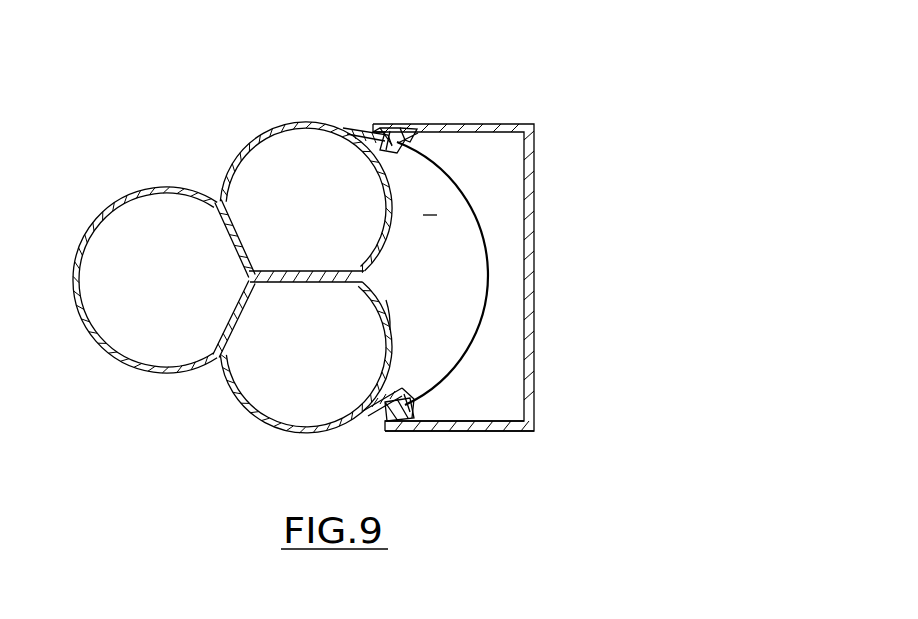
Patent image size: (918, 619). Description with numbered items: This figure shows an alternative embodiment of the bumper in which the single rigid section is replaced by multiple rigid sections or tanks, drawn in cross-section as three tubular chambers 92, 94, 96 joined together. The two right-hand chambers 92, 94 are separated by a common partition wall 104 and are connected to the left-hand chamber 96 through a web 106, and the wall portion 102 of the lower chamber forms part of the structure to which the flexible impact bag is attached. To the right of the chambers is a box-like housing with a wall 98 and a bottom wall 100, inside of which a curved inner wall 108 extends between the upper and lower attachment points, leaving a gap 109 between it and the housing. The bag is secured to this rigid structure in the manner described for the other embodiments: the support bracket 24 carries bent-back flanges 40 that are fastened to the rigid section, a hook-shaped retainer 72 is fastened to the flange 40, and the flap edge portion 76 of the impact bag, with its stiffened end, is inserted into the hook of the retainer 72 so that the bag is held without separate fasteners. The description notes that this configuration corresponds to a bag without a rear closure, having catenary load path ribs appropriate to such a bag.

The front-surface support bracket 24 is at (376, 163).
The bent-back flange 40 is at (370, 141).
The hook-shaped retainer 72 is at (400, 144).
The flap edge portion 76 is at (378, 136).
The lower tubular chamber 92 is at (268, 424).
The upper tubular chamber 94 is at (292, 125).
The outer tubular chamber 96 is at (150, 190).
The housing wall 98 is at (534, 308).
The bottom wall 100 is at (477, 398).
The chamber wall portion 102 is at (380, 318).
The partition wall 104 is at (302, 267).
The connecting web 106 is at (222, 244).
The curved inner wall 108 is at (480, 262).
The gap 109 is at (430, 212).